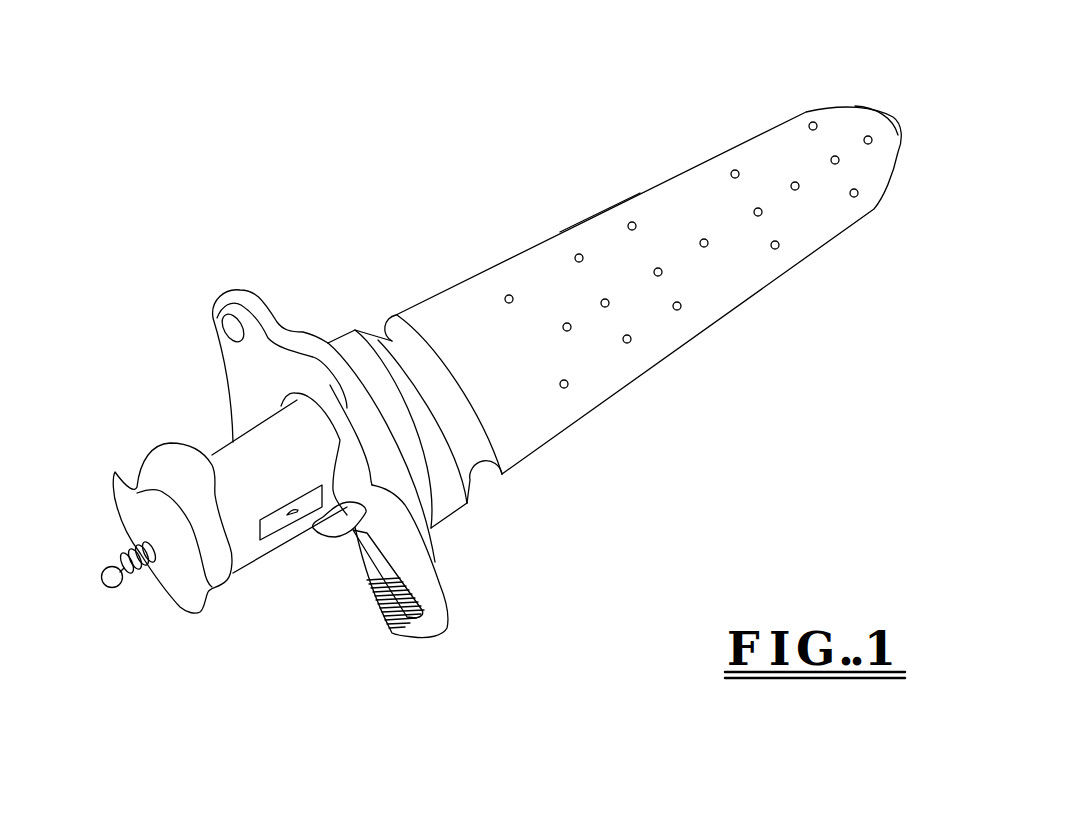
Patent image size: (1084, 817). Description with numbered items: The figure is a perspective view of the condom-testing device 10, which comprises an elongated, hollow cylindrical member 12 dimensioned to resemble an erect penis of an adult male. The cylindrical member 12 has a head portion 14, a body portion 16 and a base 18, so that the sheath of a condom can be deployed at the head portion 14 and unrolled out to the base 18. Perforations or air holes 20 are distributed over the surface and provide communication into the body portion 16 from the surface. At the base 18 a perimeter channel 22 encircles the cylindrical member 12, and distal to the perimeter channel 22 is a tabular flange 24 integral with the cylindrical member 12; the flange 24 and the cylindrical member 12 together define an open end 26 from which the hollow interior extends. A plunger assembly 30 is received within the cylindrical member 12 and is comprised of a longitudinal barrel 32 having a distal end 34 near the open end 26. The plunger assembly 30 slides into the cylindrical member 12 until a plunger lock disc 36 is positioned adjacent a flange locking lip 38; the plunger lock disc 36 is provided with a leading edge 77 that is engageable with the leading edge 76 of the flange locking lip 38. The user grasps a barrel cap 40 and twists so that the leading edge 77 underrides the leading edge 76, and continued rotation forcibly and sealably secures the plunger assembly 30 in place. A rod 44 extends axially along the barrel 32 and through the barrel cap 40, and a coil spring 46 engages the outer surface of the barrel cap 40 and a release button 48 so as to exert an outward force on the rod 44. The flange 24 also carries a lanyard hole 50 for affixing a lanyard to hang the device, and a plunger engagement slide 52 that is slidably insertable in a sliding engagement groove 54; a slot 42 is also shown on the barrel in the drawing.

The condom-testing device 10 is at (401, 130).
The cylindrical member 12 is at (715, 305).
The head portion 14 is at (878, 123).
The body portion 16 is at (617, 275).
The base 18 is at (460, 535).
The air holes 20 is at (735, 170).
The perimeter channel 22 is at (488, 488).
The tabular flange 24 is at (272, 358).
The open end 26 is at (282, 395).
The plunger assembly 30 is at (265, 588).
The longitudinal barrel 32 is at (220, 462).
The distal end 34 is at (248, 597).
The plunger lock disc 36 is at (157, 465).
The flange locking lip 38 is at (367, 490).
The barrel cap 40 is at (190, 600).
The slot 42 is at (272, 523).
The rod 44 is at (137, 567).
The coil spring 46 is at (118, 556).
The release button 48 is at (112, 588).
The lanyard hole 50 is at (232, 325).
The plunger engagement slide 52 is at (400, 629).
The sliding engagement groove 54 is at (358, 552).
The leading edge of flange locking lip 76 is at (330, 427).
The leading edge of plunger lock disc 77 is at (203, 491).